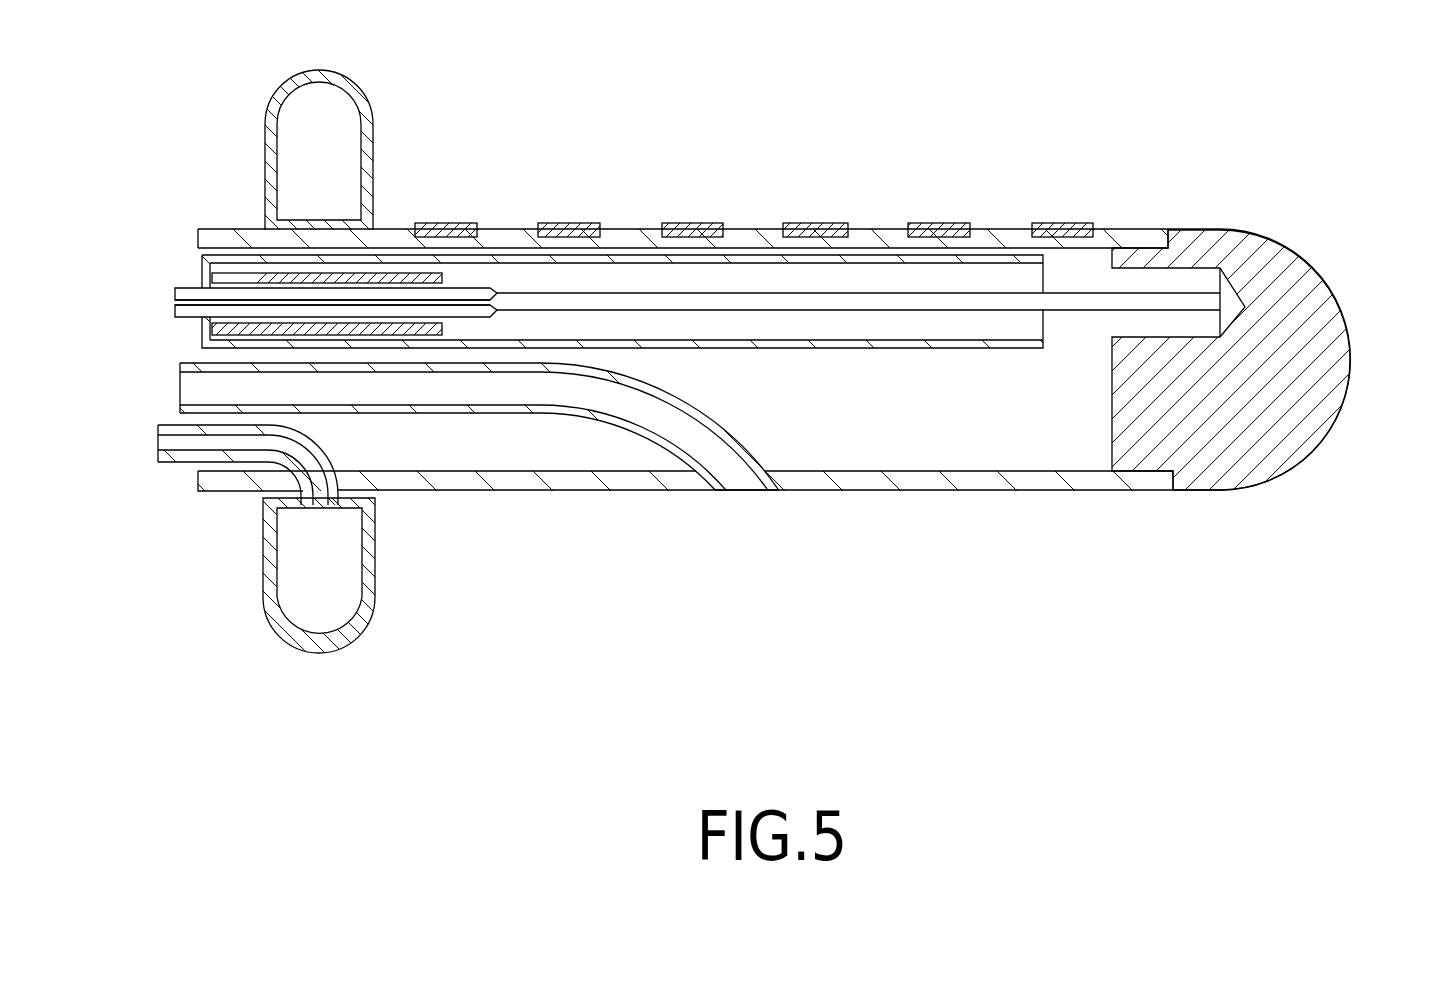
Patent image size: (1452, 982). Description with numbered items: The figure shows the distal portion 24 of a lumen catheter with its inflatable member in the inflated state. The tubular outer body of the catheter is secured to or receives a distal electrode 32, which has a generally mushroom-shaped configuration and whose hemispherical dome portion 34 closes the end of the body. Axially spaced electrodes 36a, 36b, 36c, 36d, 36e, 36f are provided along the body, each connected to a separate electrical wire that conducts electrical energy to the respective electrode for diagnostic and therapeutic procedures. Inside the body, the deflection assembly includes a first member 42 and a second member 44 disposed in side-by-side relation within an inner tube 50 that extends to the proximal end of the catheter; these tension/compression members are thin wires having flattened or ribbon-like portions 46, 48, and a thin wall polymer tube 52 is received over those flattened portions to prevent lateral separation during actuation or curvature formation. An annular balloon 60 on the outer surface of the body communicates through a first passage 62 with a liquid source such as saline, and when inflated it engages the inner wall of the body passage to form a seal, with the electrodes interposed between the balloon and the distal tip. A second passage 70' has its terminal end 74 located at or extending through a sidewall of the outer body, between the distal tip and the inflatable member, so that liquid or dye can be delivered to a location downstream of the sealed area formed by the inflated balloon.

The distal portion 24 is at (1332, 253).
The distal electrode 32 is at (1217, 243).
The hemispherical dome portion 34 is at (1270, 253).
The axially spaced electrode 36a is at (447, 223).
The axially spaced electrode 36b is at (573, 223).
The axially spaced electrode 36c is at (695, 223).
The axially spaced electrode 36d is at (822, 223).
The axially spaced electrode 36e is at (952, 223).
The axially spaced electrode 36f is at (1082, 223).
The first member 42 is at (175, 291).
The second member 44 is at (175, 307).
The flattened ribbon-like portion 46 is at (767, 291).
The flattened ribbon-like portion 48 is at (880, 309).
The inner tube 50 is at (229, 270).
The thin wall polymer tube 52 is at (645, 255).
The balloon 60 is at (368, 103).
The first passage 62 is at (170, 463).
The second passage 70' is at (726, 365).
The terminal end 74 is at (762, 495).